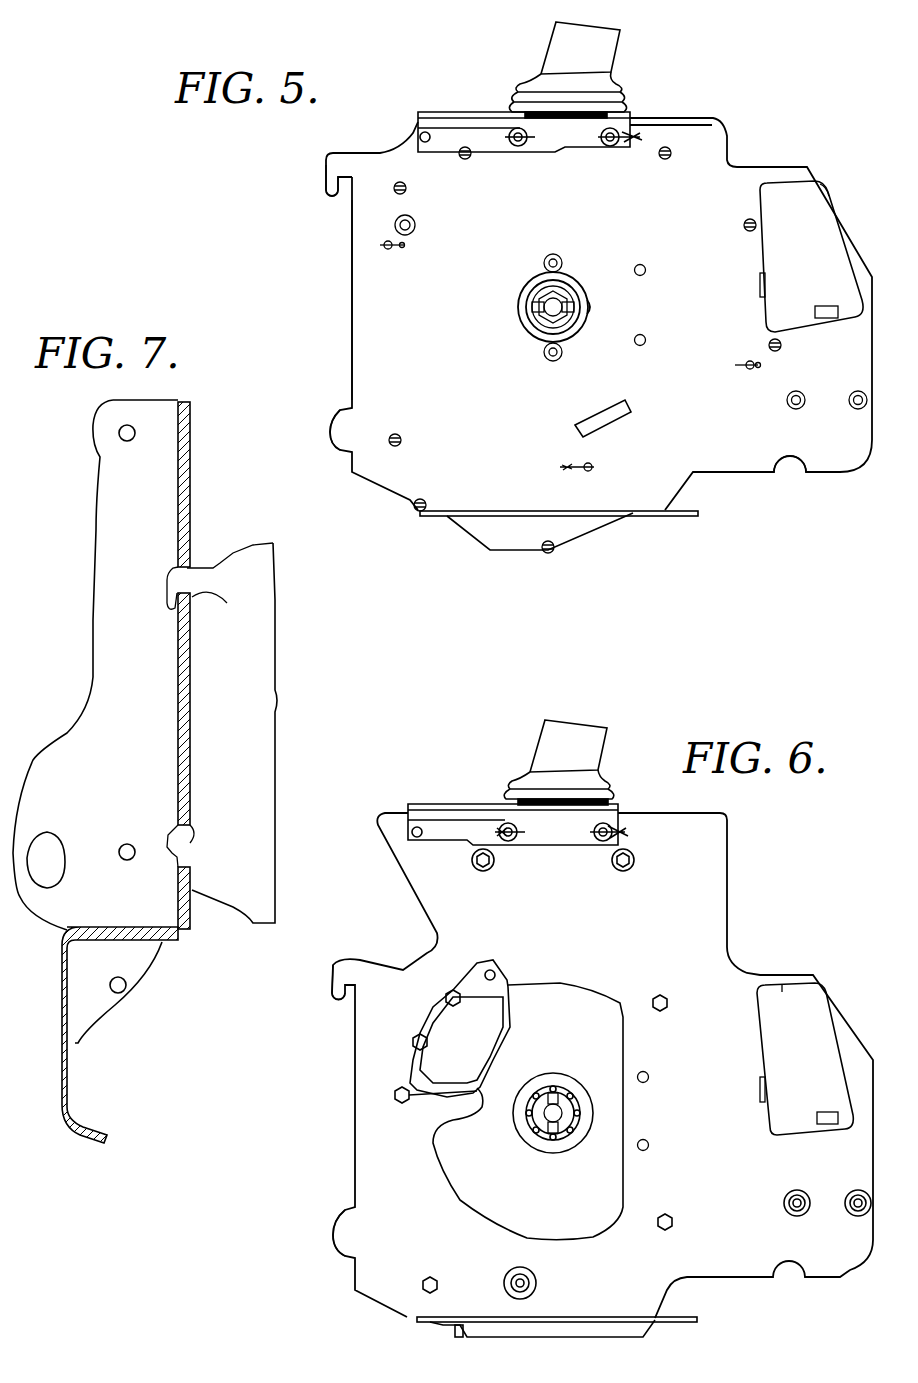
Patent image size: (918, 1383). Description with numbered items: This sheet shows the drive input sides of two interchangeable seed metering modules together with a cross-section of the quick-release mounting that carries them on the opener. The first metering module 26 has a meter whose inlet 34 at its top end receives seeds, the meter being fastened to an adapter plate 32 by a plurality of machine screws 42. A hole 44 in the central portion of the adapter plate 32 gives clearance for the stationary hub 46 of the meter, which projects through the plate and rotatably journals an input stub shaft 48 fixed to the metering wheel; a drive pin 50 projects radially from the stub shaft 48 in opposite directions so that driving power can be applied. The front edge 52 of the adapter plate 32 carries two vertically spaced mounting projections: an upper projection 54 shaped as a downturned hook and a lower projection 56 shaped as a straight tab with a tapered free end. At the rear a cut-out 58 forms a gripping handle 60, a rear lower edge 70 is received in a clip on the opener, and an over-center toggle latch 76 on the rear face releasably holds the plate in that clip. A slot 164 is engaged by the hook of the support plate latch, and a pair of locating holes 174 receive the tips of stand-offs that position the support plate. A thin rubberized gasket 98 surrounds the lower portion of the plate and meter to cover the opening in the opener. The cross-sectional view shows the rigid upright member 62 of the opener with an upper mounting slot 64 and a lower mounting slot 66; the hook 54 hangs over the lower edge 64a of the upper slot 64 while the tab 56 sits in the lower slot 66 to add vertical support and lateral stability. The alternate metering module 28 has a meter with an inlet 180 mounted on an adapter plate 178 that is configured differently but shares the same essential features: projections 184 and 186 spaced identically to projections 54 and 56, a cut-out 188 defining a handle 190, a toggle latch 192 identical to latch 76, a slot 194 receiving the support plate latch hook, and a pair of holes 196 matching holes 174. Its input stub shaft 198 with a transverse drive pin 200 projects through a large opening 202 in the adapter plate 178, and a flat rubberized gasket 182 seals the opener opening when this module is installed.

In FIG. 5, the metering module 26 is at (716, 98).
In FIG. 6, the alternate metering module 28 is at (757, 815).
In FIG. 5, the adapter plate 32 is at (810, 158).
In FIG. 7, the adapter plate 32 is at (278, 707).
In FIG. 5, the inlet 34 is at (560, 50).
In FIG. 5, the machine screws 42 is at (465, 160).
In FIG. 5, the hole 44 is at (590, 307).
In FIG. 5, the hub 46 is at (565, 277).
In FIG. 5, the input stub shaft 48 is at (540, 322).
In FIG. 5, the drive pin 50 is at (540, 313).
In FIG. 5, the front edge 52 is at (352, 292).
In FIG. 7, the front edge 52 is at (180, 712).
In FIG. 5, the upper mounting projection 54 is at (333, 177).
In FIG. 7, the upper mounting projection 54 is at (175, 590).
In FIG. 5, the lower mounting projection 56 is at (340, 424).
In FIG. 7, the lower mounting projection 56 is at (174, 840).
In FIG. 5, the cut-out 58 is at (825, 210).
In FIG. 5, the gripping handle 60 is at (843, 230).
In FIG. 7, the upright member 62 is at (186, 438).
In FIG. 7, the upper mounting slot 64 is at (188, 558).
In FIG. 7, the lower edge 64a is at (216, 602).
In FIG. 7, the lower mounting slot 66 is at (192, 832).
In FIG. 5, the rear lower edge 70 is at (760, 474).
In FIG. 5, the over-center toggle latch 76 is at (817, 303).
In FIG. 5, the gasket 98 is at (640, 518).
In FIG. 5, the slot 164 is at (758, 286).
In FIG. 5, the locating holes 174 is at (644, 266).
In FIG. 6, the adapter plate 178 is at (738, 905).
In FIG. 6, the inlet 180 is at (578, 735).
In FIG. 6, the gasket 182 is at (590, 1316).
In FIG. 6, the upper projection 184 is at (333, 985).
In FIG. 6, the lower projection 186 is at (345, 1232).
In FIG. 6, the cut-out 188 is at (784, 990).
In FIG. 6, the handle 190 is at (843, 1030).
In FIG. 6, the toggle latch 192 is at (818, 1109).
In FIG. 6, the slot 194 is at (757, 1093).
In FIG. 6, the holes 196 is at (650, 1145).
In FIG. 6, the input stub shaft 198 is at (550, 1125).
In FIG. 6, the drive pin 200 is at (558, 1093).
In FIG. 6, the opening 202 is at (462, 1200).